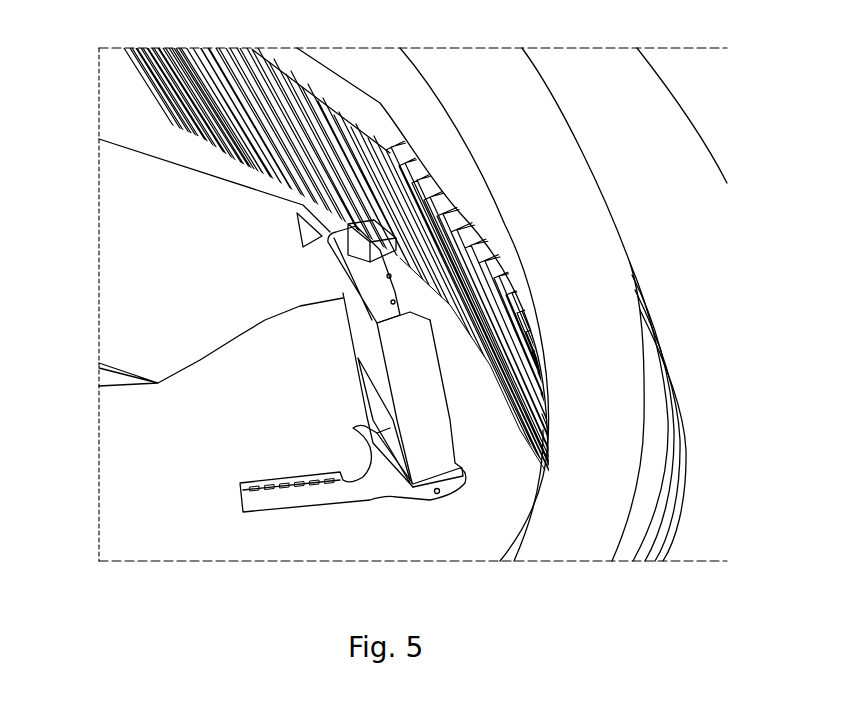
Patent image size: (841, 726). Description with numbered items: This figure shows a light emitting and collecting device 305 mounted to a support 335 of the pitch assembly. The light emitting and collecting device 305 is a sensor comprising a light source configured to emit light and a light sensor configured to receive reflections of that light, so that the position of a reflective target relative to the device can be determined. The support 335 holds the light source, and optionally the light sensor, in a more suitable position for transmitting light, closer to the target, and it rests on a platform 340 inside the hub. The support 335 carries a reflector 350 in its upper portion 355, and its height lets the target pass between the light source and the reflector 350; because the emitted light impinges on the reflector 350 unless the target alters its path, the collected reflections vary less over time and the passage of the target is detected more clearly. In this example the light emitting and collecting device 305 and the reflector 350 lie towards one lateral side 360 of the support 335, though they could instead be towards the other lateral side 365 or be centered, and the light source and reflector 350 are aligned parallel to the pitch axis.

The light emitting and collecting device 305 is at (337, 263).
The support 335 is at (433, 462).
The platform 340 is at (180, 434).
The reflector 350 is at (333, 236).
The upper portion 355 is at (345, 327).
The lateral side 360 is at (367, 316).
The other lateral side 365 is at (430, 423).